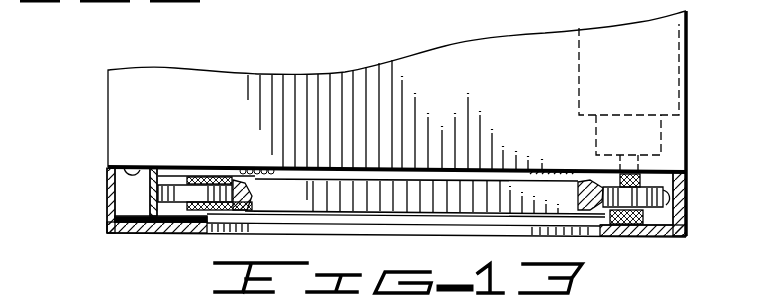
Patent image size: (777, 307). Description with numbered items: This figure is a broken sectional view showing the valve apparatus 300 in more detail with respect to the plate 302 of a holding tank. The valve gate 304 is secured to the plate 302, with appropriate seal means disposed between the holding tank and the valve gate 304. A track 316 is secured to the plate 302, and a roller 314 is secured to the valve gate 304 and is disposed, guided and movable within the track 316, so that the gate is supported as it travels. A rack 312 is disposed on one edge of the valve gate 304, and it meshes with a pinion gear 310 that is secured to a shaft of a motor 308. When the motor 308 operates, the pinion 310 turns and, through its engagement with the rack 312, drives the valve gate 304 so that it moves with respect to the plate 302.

The valve apparatus 300 is at (98, 128).
The plate 302 is at (120, 233).
The valve gate 304 is at (398, 200).
The motor 308 is at (655, 44).
The pinion gear 310 is at (665, 203).
The rack 312 is at (603, 210).
The roller 314 is at (176, 200).
The track 316 is at (148, 200).